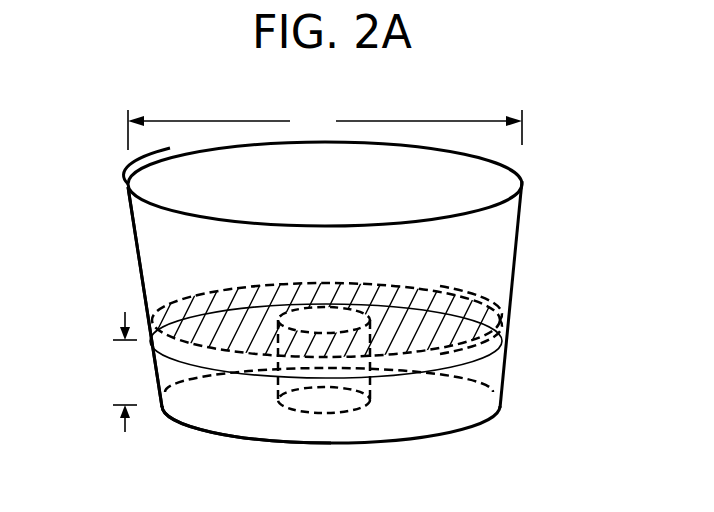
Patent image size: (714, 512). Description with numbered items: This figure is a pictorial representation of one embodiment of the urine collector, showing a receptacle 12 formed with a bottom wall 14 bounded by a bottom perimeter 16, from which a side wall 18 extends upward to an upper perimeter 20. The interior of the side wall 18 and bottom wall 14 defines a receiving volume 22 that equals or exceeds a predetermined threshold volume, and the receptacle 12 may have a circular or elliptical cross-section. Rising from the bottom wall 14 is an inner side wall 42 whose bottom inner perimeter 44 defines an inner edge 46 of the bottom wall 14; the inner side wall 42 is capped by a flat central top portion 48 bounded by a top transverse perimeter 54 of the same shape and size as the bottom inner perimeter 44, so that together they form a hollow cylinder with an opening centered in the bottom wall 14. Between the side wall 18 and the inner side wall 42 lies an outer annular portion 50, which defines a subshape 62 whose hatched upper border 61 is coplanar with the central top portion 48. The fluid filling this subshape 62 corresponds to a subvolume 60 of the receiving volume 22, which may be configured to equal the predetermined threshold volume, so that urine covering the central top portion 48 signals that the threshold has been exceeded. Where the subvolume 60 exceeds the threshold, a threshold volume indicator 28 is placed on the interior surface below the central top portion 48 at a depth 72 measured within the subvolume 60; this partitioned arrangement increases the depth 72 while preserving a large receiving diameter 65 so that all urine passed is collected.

The receptacle 12 is at (530, 261).
The bottom wall 14 is at (232, 422).
The bottom perimeter 16 is at (497, 390).
The side wall 18 is at (135, 238).
The upper perimeter 20 is at (514, 178).
The receiving volume 22 is at (144, 188).
The threshold volume indicator 28 is at (505, 343).
The inner side wall 42 is at (500, 320).
The bottom inner perimeter 44 is at (333, 413).
The inner edge 46 is at (372, 401).
The central top portion 48 is at (295, 310).
The outer annular portion 50 is at (480, 378).
The top transverse perimeter 54 is at (363, 305).
The subvolume 60 is at (166, 346).
The upper border 61 is at (485, 304).
The subshape 62 is at (257, 414).
The receiving diameter 65 is at (325, 130).
The depth 72 is at (124, 372).